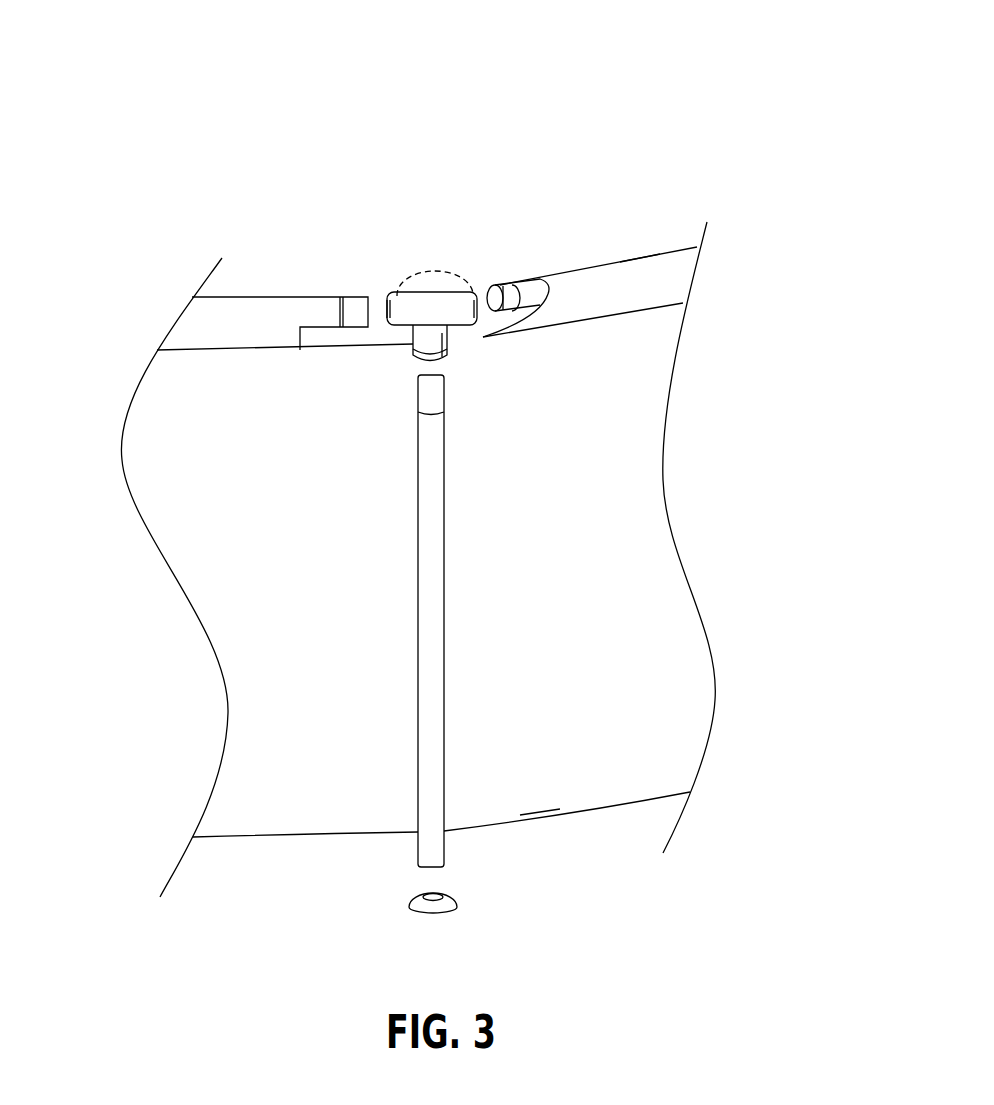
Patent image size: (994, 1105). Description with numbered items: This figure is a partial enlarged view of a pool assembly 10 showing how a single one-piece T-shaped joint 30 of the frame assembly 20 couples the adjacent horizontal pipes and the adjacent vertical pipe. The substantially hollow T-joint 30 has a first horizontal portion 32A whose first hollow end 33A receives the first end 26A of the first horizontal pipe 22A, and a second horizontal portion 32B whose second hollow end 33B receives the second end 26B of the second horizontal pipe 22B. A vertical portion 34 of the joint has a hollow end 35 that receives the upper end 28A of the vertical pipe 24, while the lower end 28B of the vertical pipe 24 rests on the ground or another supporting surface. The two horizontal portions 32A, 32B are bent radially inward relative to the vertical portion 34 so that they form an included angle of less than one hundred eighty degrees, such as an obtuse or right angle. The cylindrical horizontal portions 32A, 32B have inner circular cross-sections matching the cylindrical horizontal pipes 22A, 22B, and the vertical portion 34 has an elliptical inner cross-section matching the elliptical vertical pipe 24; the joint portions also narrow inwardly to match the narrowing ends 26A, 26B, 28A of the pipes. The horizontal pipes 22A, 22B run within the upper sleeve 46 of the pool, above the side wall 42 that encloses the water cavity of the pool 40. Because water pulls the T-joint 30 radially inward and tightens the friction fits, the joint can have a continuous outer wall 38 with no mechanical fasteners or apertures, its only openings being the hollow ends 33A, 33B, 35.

The support assembly 10 is at (677, 124).
The frame assembly 20 is at (125, 236).
The first horizontal pipe 22A is at (317, 313).
The second horizontal pipe 22B is at (525, 290).
The vertical pipe 24 is at (432, 687).
The first end 26A is at (352, 332).
The second end 26B is at (507, 320).
The upper end 28A is at (408, 401).
The lower end 28B is at (403, 857).
The T-shaped joint 30 is at (420, 232).
The first horizontal portion 32A is at (410, 302).
The second horizontal portion 32B is at (458, 305).
The first hollow end 33A is at (378, 290).
The second hollow end 33B is at (475, 324).
The vertical portion 34 is at (442, 357).
The hollow end 35 is at (410, 371).
The outer wall 38 is at (437, 300).
The second panel 40 is at (731, 752).
The side wall 42 is at (545, 787).
The upper sleeve 46 is at (642, 290).